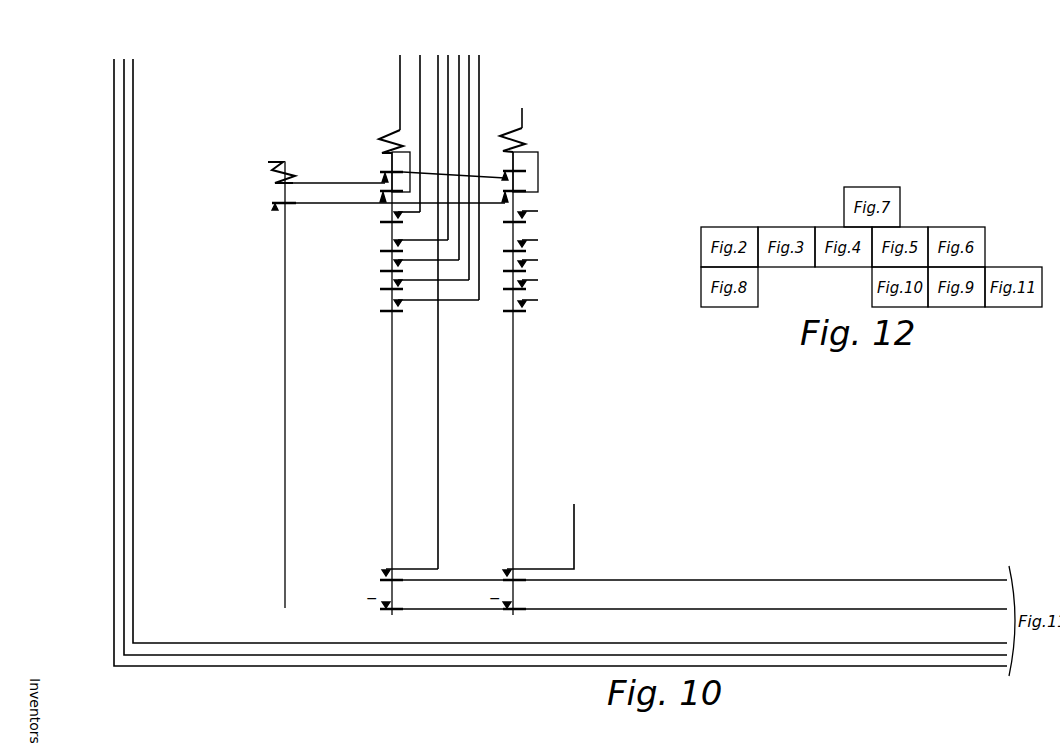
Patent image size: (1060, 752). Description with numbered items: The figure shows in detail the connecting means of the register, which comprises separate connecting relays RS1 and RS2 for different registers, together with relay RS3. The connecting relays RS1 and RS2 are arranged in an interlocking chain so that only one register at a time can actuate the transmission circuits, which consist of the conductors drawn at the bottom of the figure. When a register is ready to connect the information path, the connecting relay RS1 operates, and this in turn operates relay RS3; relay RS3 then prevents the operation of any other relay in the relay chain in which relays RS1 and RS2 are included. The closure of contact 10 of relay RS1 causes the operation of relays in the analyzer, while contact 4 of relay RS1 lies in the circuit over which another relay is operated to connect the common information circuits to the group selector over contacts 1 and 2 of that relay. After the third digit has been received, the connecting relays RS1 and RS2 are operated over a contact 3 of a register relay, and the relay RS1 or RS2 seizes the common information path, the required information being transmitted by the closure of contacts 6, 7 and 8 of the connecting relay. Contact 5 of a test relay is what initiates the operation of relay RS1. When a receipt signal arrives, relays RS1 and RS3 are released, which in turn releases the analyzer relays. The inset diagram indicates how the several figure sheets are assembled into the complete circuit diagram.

The contact 1 of relay 1 is at (399, 189).
The contact 2 of relay 2 is at (462, 184).
The contact 3 of relay 3 is at (445, 195).
The contact 4 of relay RS1 4 is at (450, 220).
The contact 5 of relay 5 is at (450, 249).
The contact 6 of relay RS 6 is at (450, 269).
The contact 7 of relay RS 7 is at (450, 288).
The contact 8 of relay RS 8 is at (450, 309).
The contact 10 of relay RS1 10 is at (466, 542).
The connecting relay RS1 is at (391, 387).
The connecting relay RS2 is at (515, 386).
The relay RS3 is at (321, 399).